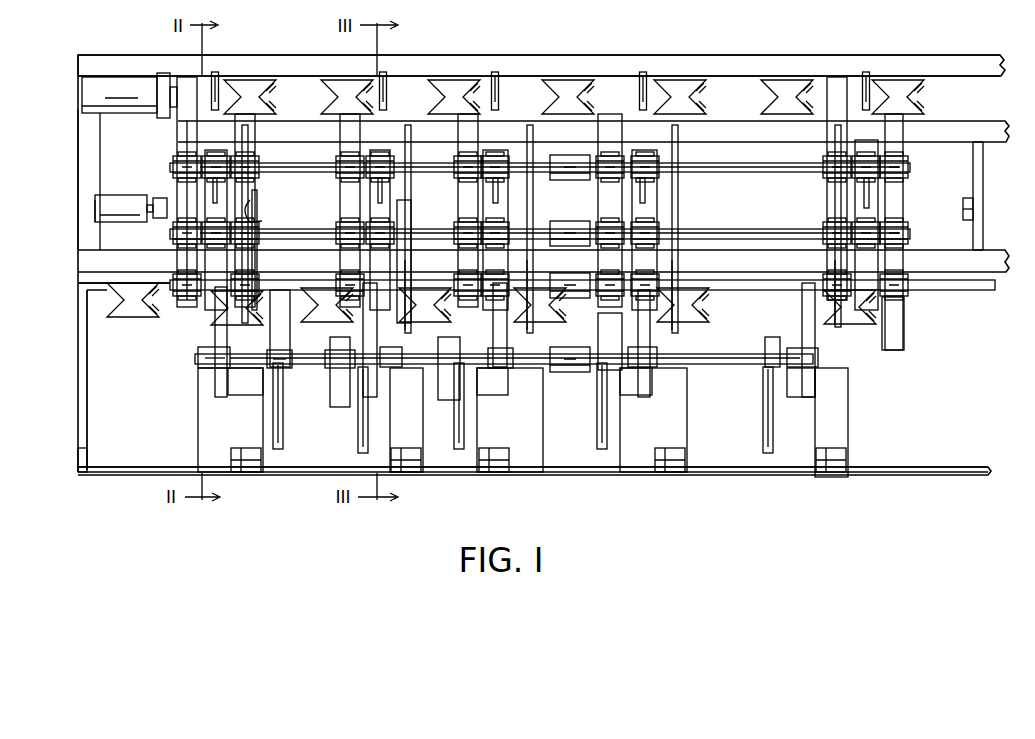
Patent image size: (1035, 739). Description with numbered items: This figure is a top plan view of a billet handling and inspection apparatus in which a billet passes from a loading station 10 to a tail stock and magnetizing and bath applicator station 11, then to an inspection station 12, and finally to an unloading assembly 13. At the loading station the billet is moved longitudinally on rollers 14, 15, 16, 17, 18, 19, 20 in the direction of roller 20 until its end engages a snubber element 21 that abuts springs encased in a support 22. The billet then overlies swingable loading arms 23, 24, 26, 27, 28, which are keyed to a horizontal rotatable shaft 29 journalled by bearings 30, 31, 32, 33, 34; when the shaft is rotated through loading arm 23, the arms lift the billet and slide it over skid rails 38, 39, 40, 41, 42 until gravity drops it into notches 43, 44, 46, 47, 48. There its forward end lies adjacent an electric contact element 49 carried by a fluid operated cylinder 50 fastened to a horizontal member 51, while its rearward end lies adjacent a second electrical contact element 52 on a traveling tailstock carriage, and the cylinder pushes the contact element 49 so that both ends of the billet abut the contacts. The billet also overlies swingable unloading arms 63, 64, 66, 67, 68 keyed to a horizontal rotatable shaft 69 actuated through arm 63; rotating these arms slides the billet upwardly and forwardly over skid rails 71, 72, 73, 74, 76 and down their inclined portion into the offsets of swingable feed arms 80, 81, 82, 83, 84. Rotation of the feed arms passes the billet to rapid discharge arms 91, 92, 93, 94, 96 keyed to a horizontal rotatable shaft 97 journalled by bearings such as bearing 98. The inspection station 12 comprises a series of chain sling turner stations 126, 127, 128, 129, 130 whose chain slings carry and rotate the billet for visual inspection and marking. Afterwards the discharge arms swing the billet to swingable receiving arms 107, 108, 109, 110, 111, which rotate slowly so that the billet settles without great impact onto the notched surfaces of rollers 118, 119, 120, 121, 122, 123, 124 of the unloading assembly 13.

The loading station 10 is at (970, 104).
The tail stock and magnetizing and bath applicator station 11 is at (996, 189).
The inspection station 12 is at (917, 419).
The unloading assembly 13 is at (948, 317).
The roller 14 is at (918, 100).
The roller 15 is at (770, 96).
The roller 16 is at (703, 96).
The roller 17 is at (586, 104).
The roller 18 is at (452, 114).
The roller 19 is at (340, 115).
The roller 20 is at (264, 101).
The snubber element 21 is at (202, 117).
The support 22 is at (121, 82).
The swingable loading arm 23 is at (219, 88).
The swingable loading arm 24 is at (387, 88).
The swingable loading arm 26 is at (499, 88).
The swingable loading arm 27 is at (648, 88).
The swingable loading arm 28 is at (867, 88).
The horizontal rotatable shaft 29 is at (326, 175).
The bearing 30 is at (175, 166).
The bearing 31 is at (346, 182).
The bearing 32 is at (463, 180).
The bearing 33 is at (606, 176).
The bearing 34 is at (906, 170).
The skid rail 38 is at (265, 215).
The skid rail 39 is at (408, 226).
The skid rail 40 is at (532, 215).
The skid rail 41 is at (679, 216).
The skid rail 42 is at (845, 195).
The notch 43 is at (257, 200).
The notch 44 is at (410, 195).
The notch 46 is at (533, 191).
The notch 47 is at (679, 195).
The notch 48 is at (834, 195).
The electric contact element 49 is at (160, 198).
The fluid operated cylinder 50 is at (108, 222).
The horizontal member 51 is at (78, 178).
The second electrical contact element 52 is at (963, 206).
The swingable unloading arm 63 is at (248, 190).
The swingable unloading arm 64 is at (372, 190).
The swingable unloading arm 66 is at (493, 195).
The swingable unloading arm 67 is at (640, 195).
The swingable unloading arm 68 is at (876, 195).
The horizontal rotatable shaft 69 is at (322, 240).
The skid rail 71 is at (300, 250).
The skid rail 72 is at (404, 258).
The skid rail 73 is at (527, 257).
The skid rail 74 is at (672, 257).
The skid rail 76 is at (830, 256).
The swingable feed arm 80 is at (228, 346).
The swingable feed arm 81 is at (405, 343).
The swingable feed arm 82 is at (507, 340).
The swingable feed arm 83 is at (651, 340).
The swingable feed arm 84 is at (817, 338).
The rapid discharge arm 91 is at (284, 430).
The rapid discharge arm 92 is at (361, 430).
The rapid discharge arm 93 is at (466, 433).
The rapid discharge arm 94 is at (608, 433).
The rapid discharge arm 96 is at (772, 430).
The horizontal rotatable shaft 97 is at (288, 365).
The bearing 98 is at (332, 380).
The swingable receiving arm 107 is at (281, 337).
The swingable receiving arm 108 is at (345, 392).
The swingable receiving arm 109 is at (442, 392).
The swingable receiving arm 110 is at (599, 330).
The swingable receiving arm 111 is at (767, 335).
The roller 118 is at (142, 317).
The roller 119 is at (246, 318).
The roller 120 is at (312, 308).
The roller 121 is at (415, 318).
The roller 122 is at (552, 310).
The roller 123 is at (712, 308).
The roller 124 is at (868, 318).
The chain sling turner station 126 is at (232, 427).
The chain sling turner station 127 is at (410, 421).
The chain sling turner station 128 is at (535, 410).
The chain sling turner station 129 is at (688, 410).
The chain sling turner station 130 is at (846, 410).